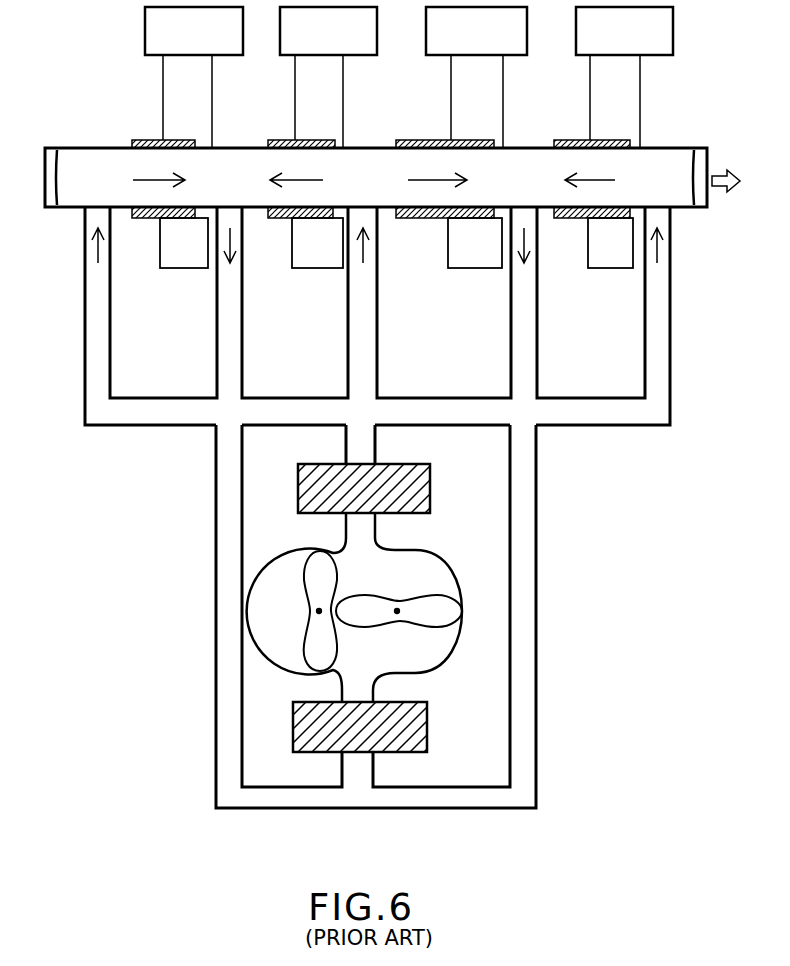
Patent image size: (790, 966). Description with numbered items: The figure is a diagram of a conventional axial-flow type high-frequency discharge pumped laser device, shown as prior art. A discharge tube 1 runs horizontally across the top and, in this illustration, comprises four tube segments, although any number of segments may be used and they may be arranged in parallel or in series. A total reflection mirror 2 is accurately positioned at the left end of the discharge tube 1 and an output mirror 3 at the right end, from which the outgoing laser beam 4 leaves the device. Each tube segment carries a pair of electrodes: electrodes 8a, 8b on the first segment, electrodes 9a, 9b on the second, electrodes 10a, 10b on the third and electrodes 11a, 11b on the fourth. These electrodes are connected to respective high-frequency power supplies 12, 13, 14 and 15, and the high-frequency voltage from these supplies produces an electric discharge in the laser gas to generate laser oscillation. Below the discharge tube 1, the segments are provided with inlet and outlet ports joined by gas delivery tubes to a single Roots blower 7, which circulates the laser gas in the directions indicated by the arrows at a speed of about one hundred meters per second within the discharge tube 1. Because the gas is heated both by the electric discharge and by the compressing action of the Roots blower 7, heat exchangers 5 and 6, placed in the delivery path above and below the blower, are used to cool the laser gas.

The discharge tube 1 is at (88, 147).
The total reflection mirror 2 is at (50, 212).
The output mirror 3 is at (699, 210).
The outgoing laser beam 4 is at (716, 172).
The heat exchanger 5 is at (430, 492).
The heat exchanger 6 is at (427, 726).
The Roots blower 7 is at (462, 612).
The electrode 8a is at (159, 124).
The electrode 8b is at (164, 240).
The electrode 9a is at (297, 124).
The electrode 9b is at (296, 240).
The electrode 10a is at (443, 125).
The electrode 10b is at (443, 240).
The electrode 11a is at (587, 124).
The electrode 11b is at (587, 240).
The high-frequency power supply 12 is at (194, 77).
The high-frequency power supply 13 is at (328, 77).
The high-frequency power supply 14 is at (476, 77).
The high-frequency power supply 15 is at (624, 77).